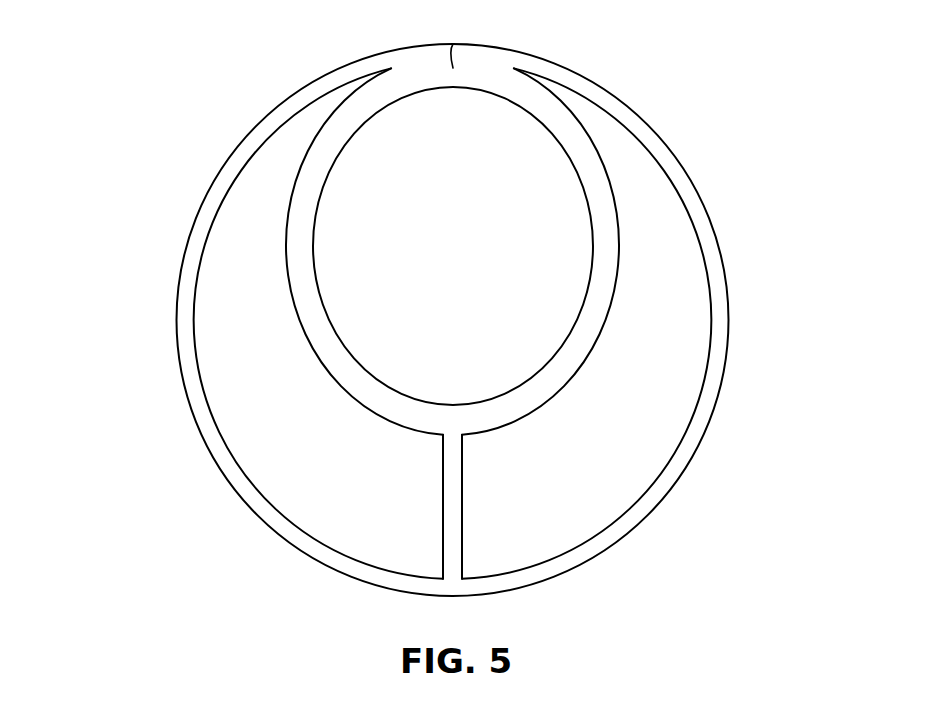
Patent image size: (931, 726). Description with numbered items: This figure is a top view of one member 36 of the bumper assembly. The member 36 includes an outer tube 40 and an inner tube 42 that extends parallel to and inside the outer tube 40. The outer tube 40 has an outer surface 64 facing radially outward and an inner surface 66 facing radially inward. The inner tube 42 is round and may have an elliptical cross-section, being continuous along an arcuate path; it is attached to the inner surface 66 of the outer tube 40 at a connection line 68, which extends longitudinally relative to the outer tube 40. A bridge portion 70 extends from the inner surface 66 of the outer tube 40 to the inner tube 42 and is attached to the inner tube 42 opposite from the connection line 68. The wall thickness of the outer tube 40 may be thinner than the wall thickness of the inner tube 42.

The member 36 is at (412, 323).
The outer tube 40 is at (675, 153).
The inner tube 42 is at (620, 245).
The outer surface 64 is at (620, 536).
The inner surface 66 is at (618, 518).
The connection line 68 is at (455, 45).
The bridge portion 70 is at (443, 505).